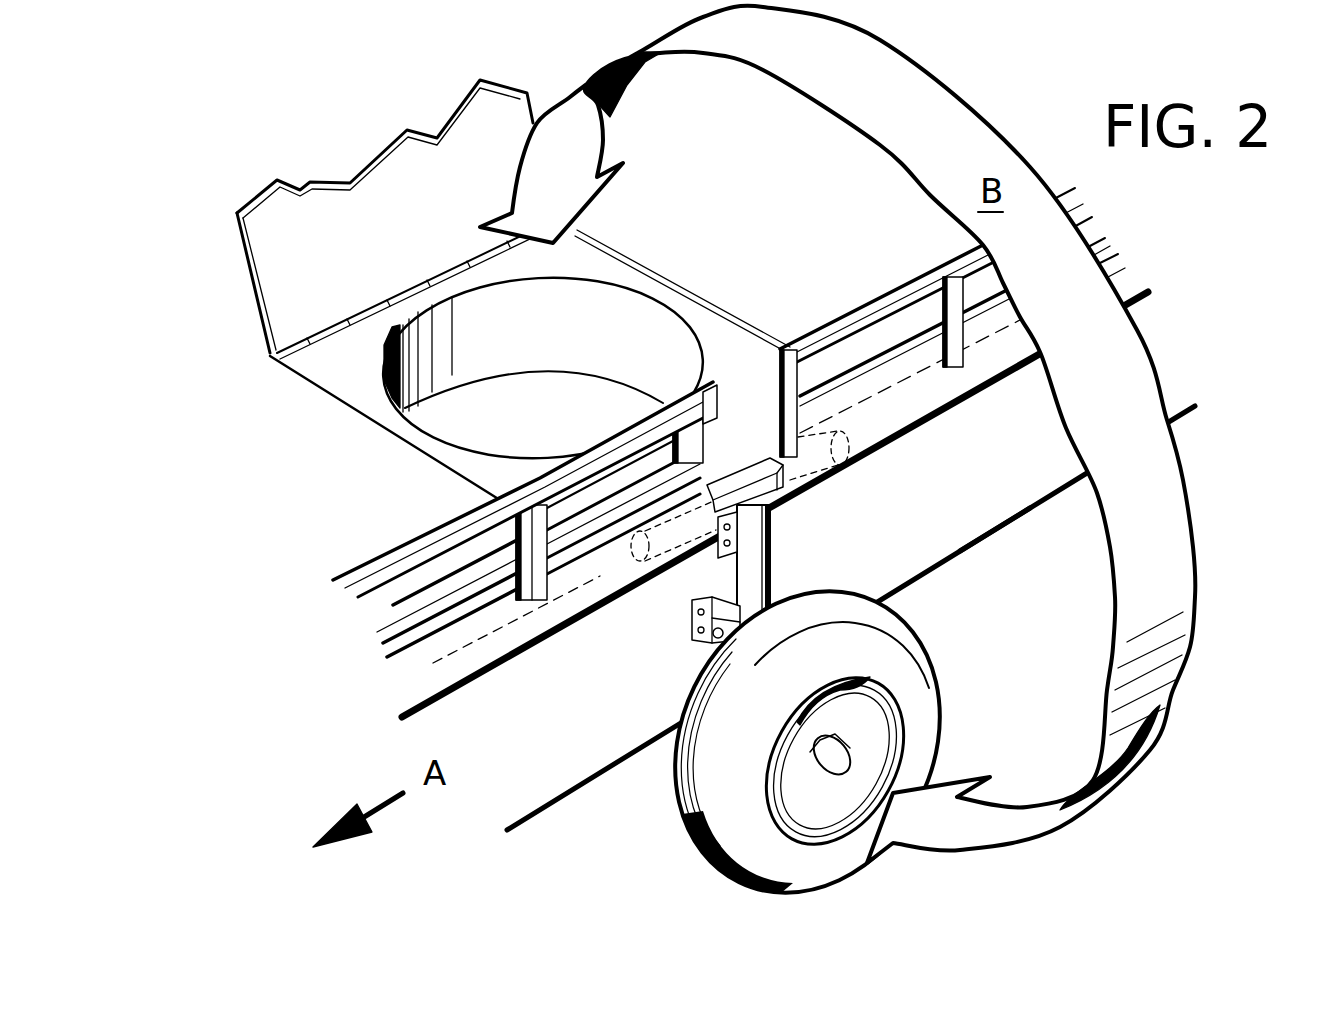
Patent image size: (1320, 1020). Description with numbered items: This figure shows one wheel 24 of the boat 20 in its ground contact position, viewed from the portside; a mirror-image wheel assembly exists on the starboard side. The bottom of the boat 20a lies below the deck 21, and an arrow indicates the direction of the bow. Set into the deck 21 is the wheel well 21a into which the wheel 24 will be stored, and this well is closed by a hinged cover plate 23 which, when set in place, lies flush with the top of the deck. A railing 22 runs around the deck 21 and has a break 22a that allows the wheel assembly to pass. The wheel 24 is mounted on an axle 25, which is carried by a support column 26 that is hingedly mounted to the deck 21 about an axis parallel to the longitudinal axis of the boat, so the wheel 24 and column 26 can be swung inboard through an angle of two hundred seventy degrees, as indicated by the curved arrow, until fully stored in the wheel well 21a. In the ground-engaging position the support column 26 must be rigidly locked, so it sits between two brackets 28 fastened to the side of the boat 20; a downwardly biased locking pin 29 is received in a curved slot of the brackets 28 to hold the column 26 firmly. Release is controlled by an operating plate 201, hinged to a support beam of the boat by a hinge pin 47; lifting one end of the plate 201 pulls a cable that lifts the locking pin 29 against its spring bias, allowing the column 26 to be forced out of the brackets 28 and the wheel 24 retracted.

The boat 20 is at (547, 755).
The bottom of the boat 20a is at (993, 533).
The deck 21 is at (732, 150).
The wheel well 21a is at (562, 382).
The railing 22 is at (437, 526).
The break in the railing 22a is at (708, 384).
The hinged cover plate 23 is at (373, 259).
The wheel 24 is at (920, 690).
The axle 25 is at (800, 752).
The support column 26 is at (757, 577).
The brackets 28 is at (690, 612).
The locking pin 29 is at (708, 650).
The hinge pin 47 is at (737, 518).
The operating plate 201 is at (745, 483).